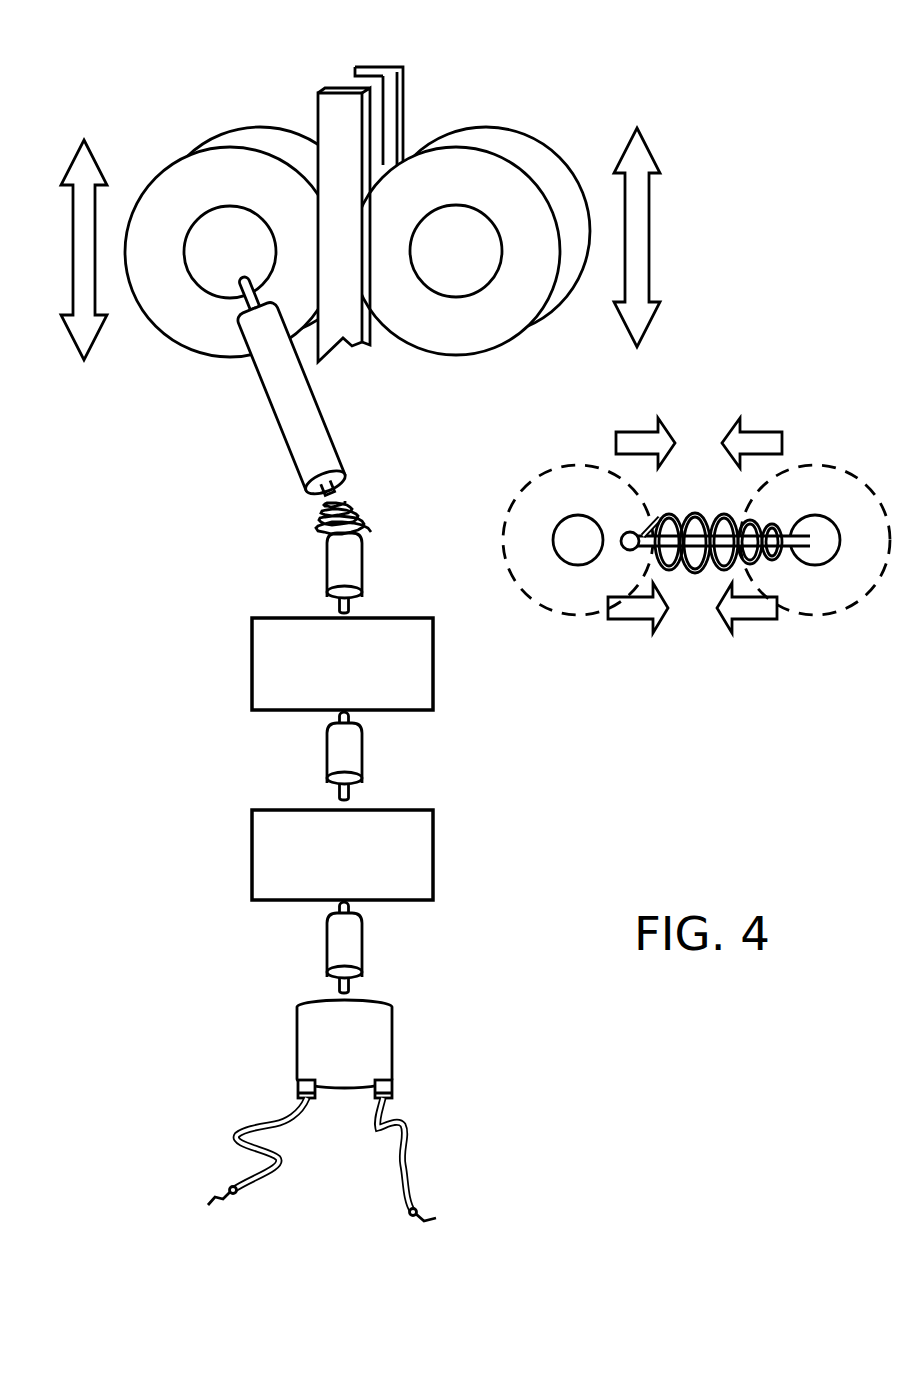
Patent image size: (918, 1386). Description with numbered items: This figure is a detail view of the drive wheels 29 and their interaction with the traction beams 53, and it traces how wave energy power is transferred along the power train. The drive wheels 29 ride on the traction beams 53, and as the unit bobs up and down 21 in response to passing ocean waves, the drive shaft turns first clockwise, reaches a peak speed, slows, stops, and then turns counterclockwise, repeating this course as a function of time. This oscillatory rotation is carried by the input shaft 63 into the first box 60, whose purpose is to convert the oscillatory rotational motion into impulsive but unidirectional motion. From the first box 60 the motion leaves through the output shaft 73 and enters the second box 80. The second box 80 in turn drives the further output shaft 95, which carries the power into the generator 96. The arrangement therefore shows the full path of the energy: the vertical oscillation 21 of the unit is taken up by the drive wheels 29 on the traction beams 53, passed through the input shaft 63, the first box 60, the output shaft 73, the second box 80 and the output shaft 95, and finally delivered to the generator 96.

The up and down oscillation 21 is at (648, 247).
The drive wheels 29 is at (177, 165).
The traction beams 53 is at (405, 69).
The box 1 60 is at (252, 662).
The input shaft 63 is at (283, 442).
The output shaft 73 is at (363, 770).
The box 2 80 is at (435, 858).
The output shaft 95 is at (363, 955).
The generator 96 is at (395, 1052).